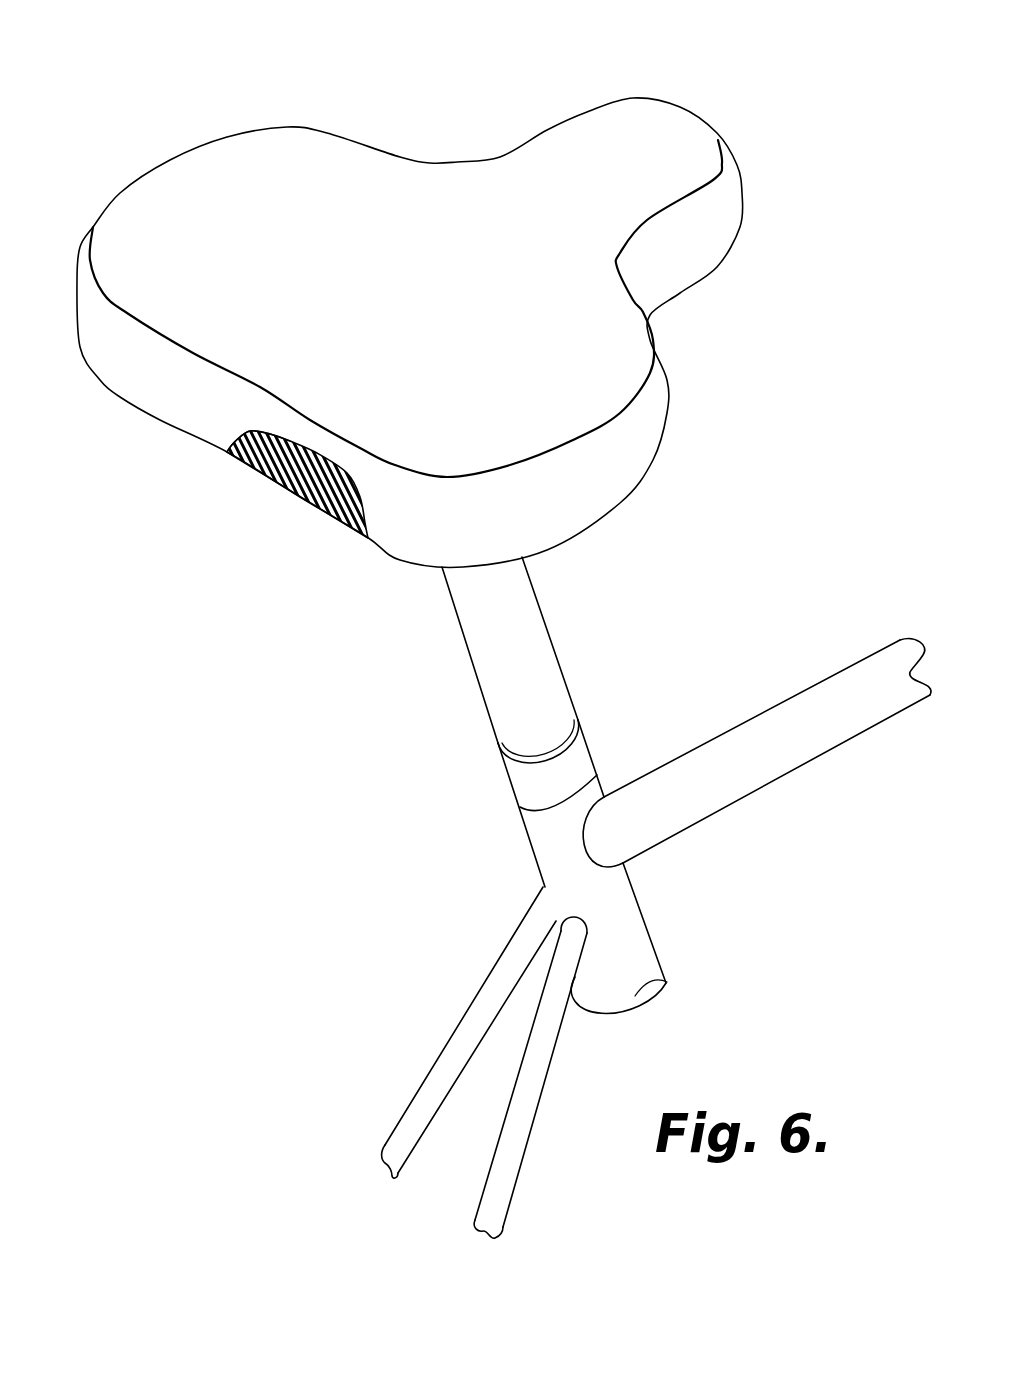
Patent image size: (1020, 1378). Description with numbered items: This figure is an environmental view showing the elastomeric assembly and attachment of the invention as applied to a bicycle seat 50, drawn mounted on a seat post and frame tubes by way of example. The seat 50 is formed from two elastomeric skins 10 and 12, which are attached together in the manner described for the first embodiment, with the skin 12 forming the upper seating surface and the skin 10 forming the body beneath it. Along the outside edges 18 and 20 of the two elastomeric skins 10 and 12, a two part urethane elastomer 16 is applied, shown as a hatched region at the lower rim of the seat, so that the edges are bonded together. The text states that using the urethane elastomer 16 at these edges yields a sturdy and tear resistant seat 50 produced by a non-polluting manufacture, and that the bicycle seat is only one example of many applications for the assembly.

The bicycle seat 50 is at (767, 128).
The elastomeric skin 10 is at (645, 467).
The elastomeric skin 12 is at (460, 160).
The two part urethane elastomer 16 is at (343, 527).
The outside edge 18 is at (260, 480).
The outside edge 20 is at (233, 435).